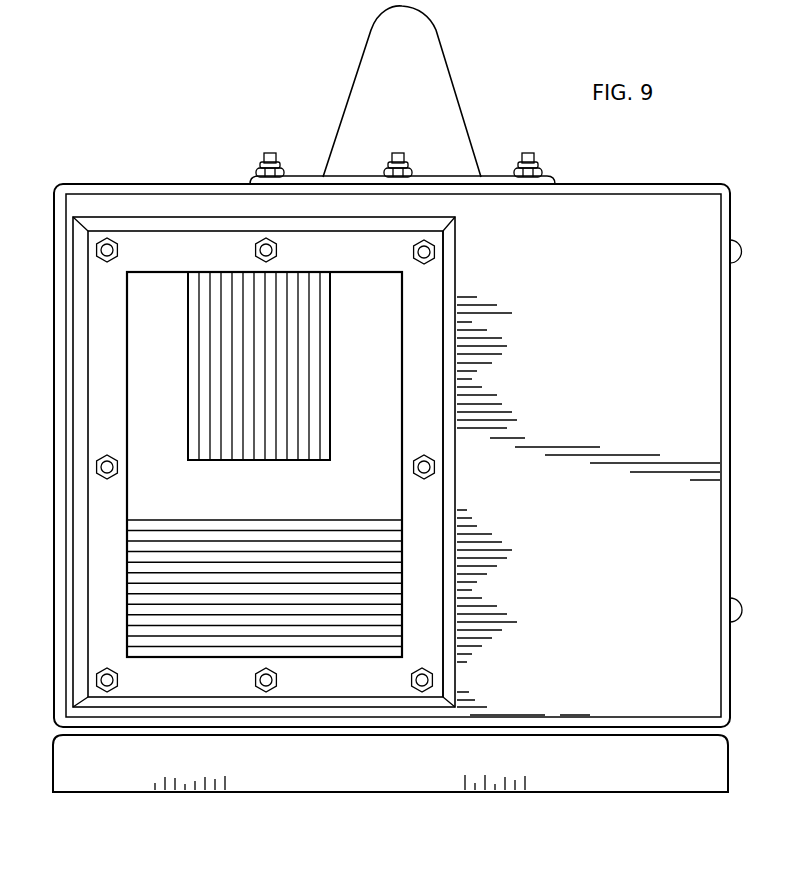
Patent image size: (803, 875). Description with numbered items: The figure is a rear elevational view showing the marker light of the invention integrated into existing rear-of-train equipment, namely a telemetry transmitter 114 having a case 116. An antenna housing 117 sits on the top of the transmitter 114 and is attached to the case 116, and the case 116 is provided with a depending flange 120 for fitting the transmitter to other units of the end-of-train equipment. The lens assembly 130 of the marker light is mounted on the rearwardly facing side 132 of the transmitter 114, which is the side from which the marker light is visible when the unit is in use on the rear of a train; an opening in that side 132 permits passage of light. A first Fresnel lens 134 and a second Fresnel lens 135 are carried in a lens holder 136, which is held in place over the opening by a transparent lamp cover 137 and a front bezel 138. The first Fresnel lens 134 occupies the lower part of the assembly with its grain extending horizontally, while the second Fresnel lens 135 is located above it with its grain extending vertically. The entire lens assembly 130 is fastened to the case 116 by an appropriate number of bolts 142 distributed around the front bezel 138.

The telemetry transmitter 114 is at (277, 128).
The antenna housing 117 is at (410, 117).
The case 116 is at (733, 347).
The front bezel 138 is at (98, 348).
The transparent lamp cover 137 is at (448, 663).
The bolts 142 is at (440, 252).
The lens holder 136 is at (280, 499).
The second Fresnel lens 135 is at (310, 372).
The first Fresnel lens 134 is at (310, 547).
The lens assembly 130 is at (458, 383).
The rearwardly facing side 132 is at (599, 505).
The depending flange 120 is at (597, 793).